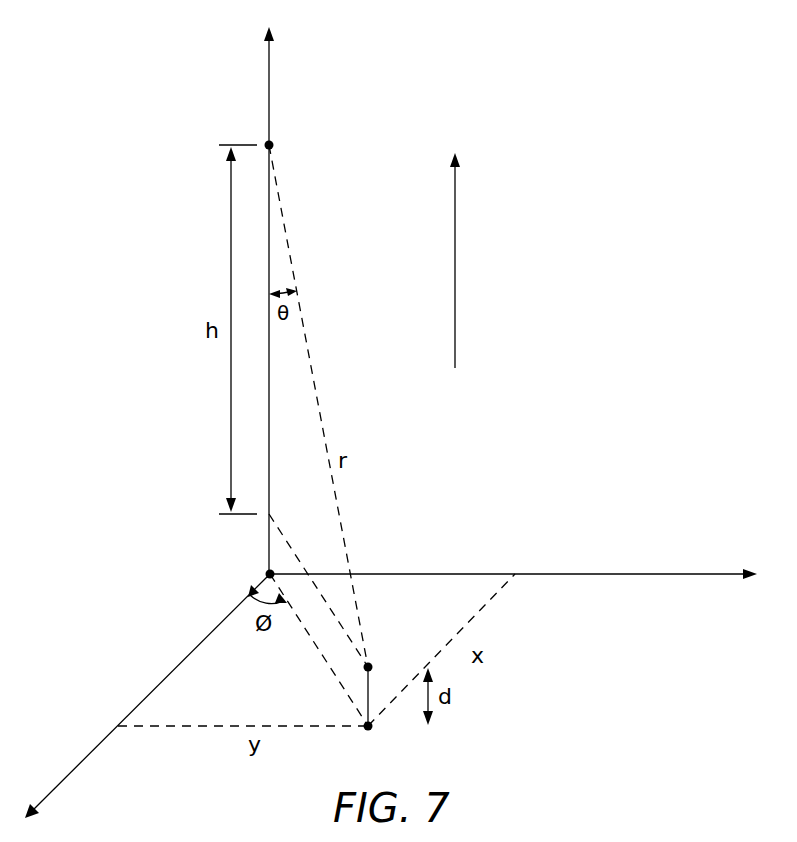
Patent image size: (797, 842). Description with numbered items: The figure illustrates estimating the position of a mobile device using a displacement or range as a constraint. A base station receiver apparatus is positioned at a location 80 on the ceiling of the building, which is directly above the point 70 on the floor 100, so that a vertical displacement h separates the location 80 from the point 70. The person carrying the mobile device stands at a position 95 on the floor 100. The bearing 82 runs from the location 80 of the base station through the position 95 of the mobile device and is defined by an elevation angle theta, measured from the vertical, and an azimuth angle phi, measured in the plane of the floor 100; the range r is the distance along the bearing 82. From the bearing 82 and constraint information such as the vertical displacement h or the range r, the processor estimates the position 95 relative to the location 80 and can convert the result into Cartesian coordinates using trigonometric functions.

The point on the floor 70 is at (265, 573).
The location of the base station receiver apparatus 80 is at (274, 145).
The bearing 82 is at (318, 395).
The position of the mobile device 95 is at (372, 663).
The floor 100 is at (610, 574).